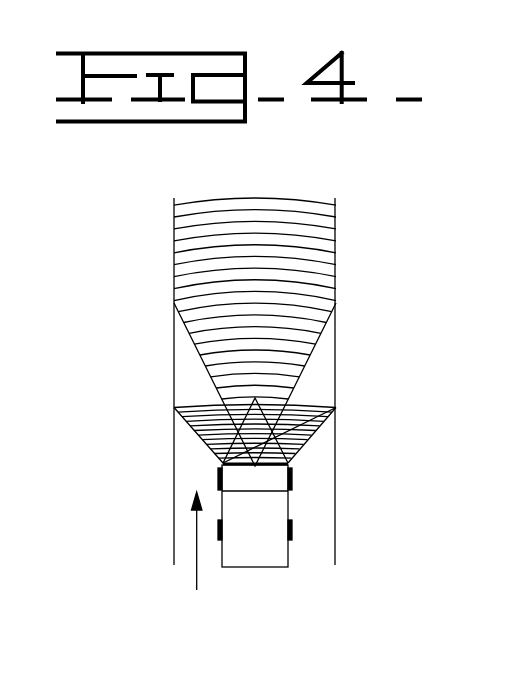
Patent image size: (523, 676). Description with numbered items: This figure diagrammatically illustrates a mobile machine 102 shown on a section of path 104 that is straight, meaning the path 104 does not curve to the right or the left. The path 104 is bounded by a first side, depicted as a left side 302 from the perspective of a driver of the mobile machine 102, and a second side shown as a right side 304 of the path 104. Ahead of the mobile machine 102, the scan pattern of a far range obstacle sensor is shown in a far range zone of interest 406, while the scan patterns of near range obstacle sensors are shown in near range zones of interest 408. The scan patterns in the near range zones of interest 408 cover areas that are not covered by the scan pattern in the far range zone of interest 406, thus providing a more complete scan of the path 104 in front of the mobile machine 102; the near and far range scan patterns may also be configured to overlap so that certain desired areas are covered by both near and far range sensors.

The mobile machine 102 is at (260, 568).
The path 104 is at (263, 605).
The left side 302 is at (173, 479).
The right side 304 is at (335, 480).
The far range zone of interest 406 is at (277, 200).
The near range zones of interest 408 is at (197, 402).